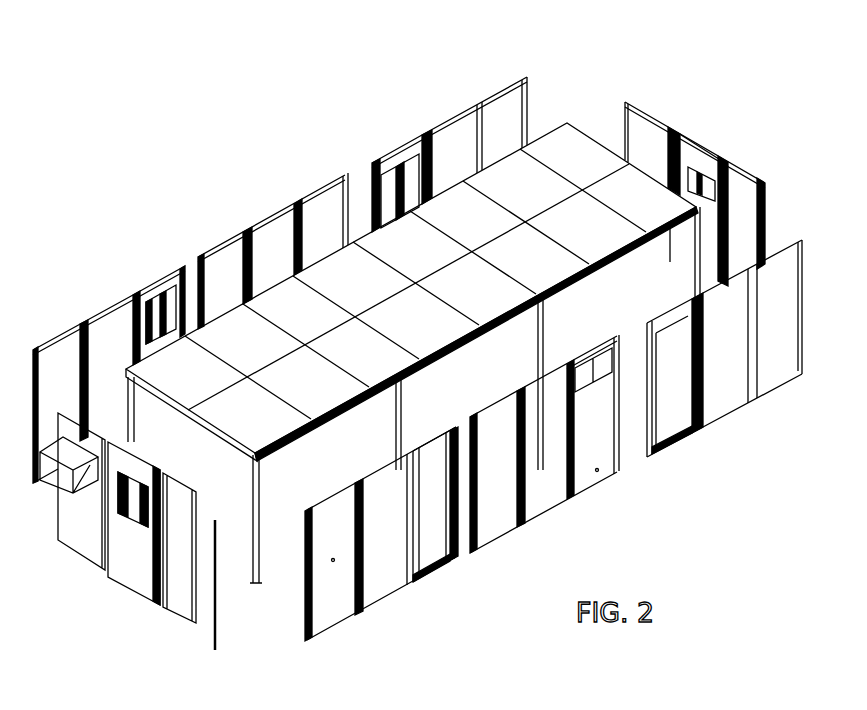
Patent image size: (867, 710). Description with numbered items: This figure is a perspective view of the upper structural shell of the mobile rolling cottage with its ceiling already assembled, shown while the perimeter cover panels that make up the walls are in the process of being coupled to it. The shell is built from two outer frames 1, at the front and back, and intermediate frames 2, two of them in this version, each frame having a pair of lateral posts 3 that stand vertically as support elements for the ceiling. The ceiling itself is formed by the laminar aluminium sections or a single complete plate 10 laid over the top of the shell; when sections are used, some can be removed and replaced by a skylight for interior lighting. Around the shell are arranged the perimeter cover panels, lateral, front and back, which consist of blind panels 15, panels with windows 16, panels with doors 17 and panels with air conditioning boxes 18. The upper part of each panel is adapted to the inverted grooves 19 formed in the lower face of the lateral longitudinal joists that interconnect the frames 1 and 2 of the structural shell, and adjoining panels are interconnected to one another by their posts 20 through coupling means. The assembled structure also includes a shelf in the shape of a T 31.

The outer frame 1 is at (697, 255).
The intermediate frame 2 is at (263, 527).
The lateral post 3 is at (398, 400).
The aluminium plate 10 is at (592, 232).
The blind panel 15 is at (110, 330).
The panel with window 16 is at (165, 282).
The panel with door 17 is at (457, 548).
The panel with air conditioning box 18 is at (707, 147).
The inverted groove 19 is at (307, 413).
The panel post 20 is at (358, 587).
The T-shaped shelf 31 is at (217, 588).